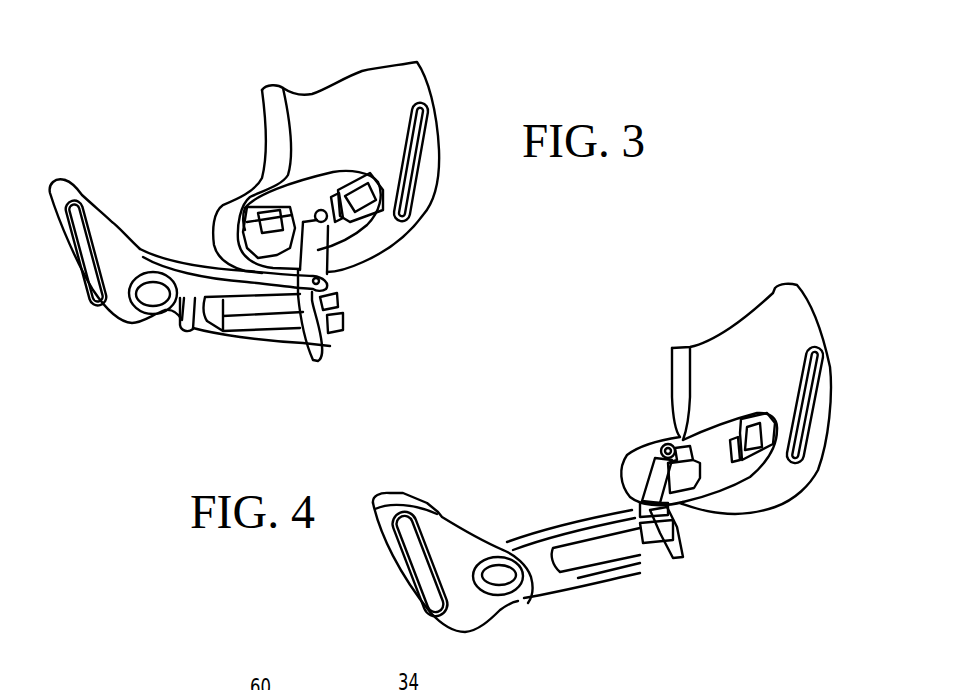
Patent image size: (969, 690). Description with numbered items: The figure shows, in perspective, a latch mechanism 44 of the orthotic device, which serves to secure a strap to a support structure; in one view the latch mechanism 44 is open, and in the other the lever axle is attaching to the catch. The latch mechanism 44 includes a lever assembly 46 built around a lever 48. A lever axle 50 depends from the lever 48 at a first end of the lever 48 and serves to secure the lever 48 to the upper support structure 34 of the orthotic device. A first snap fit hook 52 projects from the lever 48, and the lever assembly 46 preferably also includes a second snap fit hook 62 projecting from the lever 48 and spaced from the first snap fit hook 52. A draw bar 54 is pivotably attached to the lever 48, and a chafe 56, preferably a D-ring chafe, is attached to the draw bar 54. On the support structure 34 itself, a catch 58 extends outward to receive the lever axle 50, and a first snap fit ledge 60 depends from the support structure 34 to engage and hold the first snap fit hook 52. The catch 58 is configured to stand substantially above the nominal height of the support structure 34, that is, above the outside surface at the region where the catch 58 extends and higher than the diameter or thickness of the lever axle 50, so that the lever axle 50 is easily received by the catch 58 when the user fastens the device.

In FIG. 3, the upper support structure 34 is at (416, 79).
In FIG. 4, the upper support structure 34 is at (797, 327).
In FIG. 3, the latch mechanism 44 is at (251, 356).
In FIG. 4, the latch mechanism 44 is at (604, 607).
In FIG. 3, the lever assembly 46 is at (191, 334).
In FIG. 4, the lever assembly 46 is at (554, 601).
In FIG. 3, the lever 48 is at (318, 255).
In FIG. 4, the lever 48 is at (650, 481).
In FIG. 3, the lever axle 50 is at (333, 259).
In FIG. 4, the lever axle 50 is at (664, 443).
In FIG. 3, the first snap fit hook 52 is at (347, 333).
In FIG. 4, the first snap fit hook 52 is at (677, 557).
In FIG. 3, the draw bar 54 is at (196, 272).
In FIG. 4, the draw bar 54 is at (523, 533).
In FIG. 3, the chafe 56 is at (73, 187).
In FIG. 4, the chafe 56 is at (407, 570).
In FIG. 3, the catch 58 is at (283, 229).
In FIG. 4, the catch 58 is at (688, 483).
In FIG. 3, the first snap fit ledge 60 is at (363, 174).
In FIG. 4, the first snap fit ledge 60 is at (750, 420).
In FIG. 3, the second snap fit hook 62 is at (340, 299).
In FIG. 4, the second snap fit hook 62 is at (673, 527).